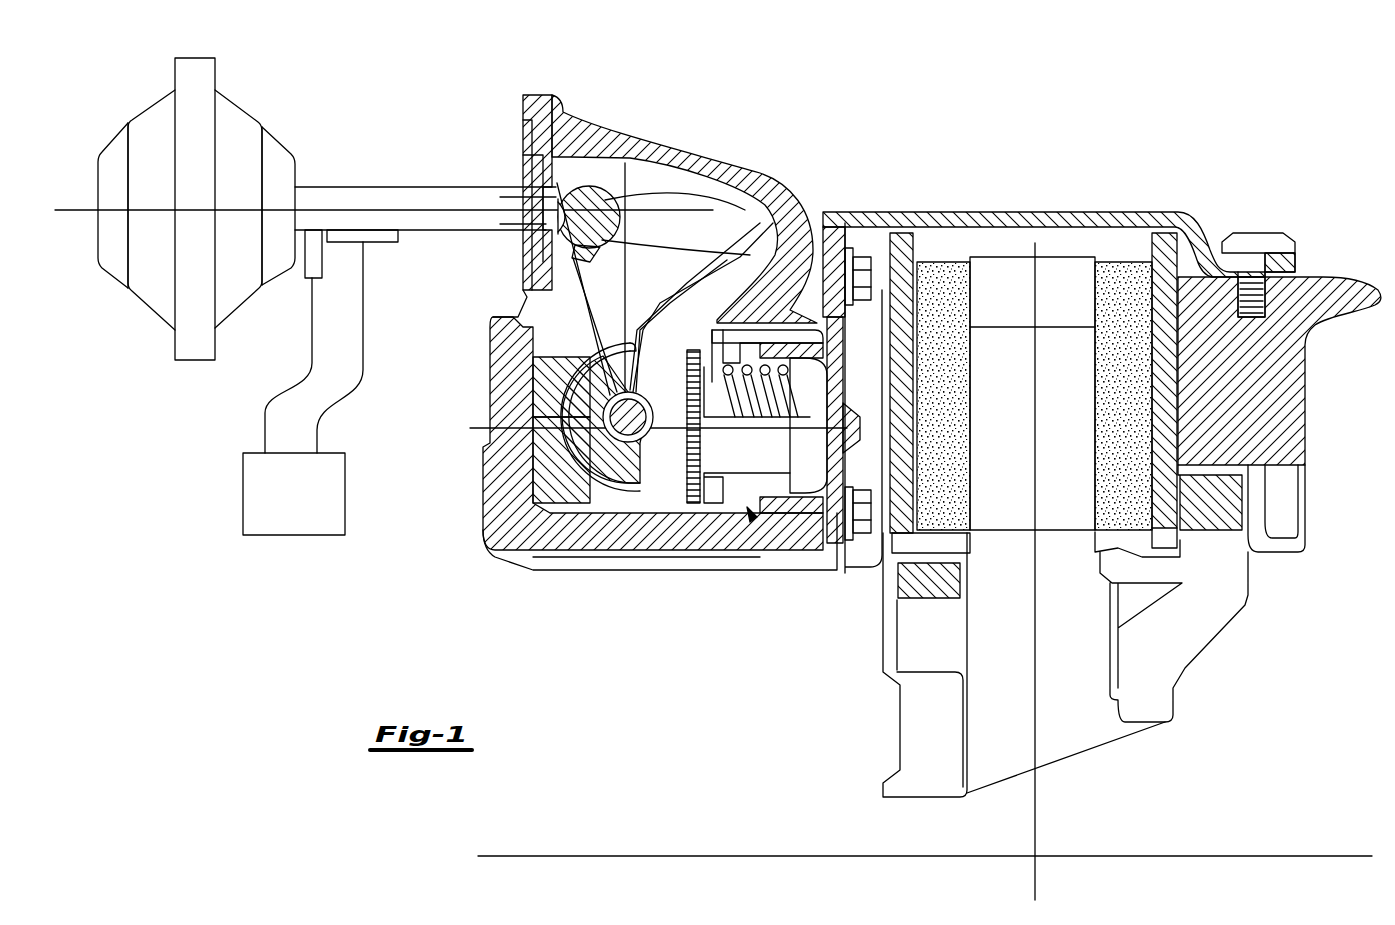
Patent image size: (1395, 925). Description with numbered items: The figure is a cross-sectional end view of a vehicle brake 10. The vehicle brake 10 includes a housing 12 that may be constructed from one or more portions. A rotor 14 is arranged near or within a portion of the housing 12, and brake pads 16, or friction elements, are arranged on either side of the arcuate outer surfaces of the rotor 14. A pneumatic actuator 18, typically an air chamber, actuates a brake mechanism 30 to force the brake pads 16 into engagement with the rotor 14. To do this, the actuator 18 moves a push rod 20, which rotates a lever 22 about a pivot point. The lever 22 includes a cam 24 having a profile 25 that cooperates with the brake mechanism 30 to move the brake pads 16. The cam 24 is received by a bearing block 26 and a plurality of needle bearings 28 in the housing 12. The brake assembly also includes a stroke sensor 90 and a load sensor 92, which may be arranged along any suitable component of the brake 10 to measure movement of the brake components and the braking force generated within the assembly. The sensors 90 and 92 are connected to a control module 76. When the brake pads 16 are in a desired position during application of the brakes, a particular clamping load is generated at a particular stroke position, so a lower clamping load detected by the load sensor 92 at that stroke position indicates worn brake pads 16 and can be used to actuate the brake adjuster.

The vehicle brake 10 is at (912, 160).
The housing 12 is at (762, 153).
The rotor 14 is at (1015, 265).
The brake pads 16 is at (1100, 360).
The pneumatic actuator 18 is at (240, 130).
The push rod 20 is at (393, 200).
The lever 22 is at (615, 180).
The cam 24 is at (600, 460).
The profile 25 is at (672, 500).
The bearing block 26 is at (510, 363).
The needle bearings 28 is at (510, 457).
The brake mechanism 30 is at (748, 555).
The control module 76 is at (294, 494).
The stroke sensor 90 is at (303, 265).
The load sensor 92 is at (383, 253).